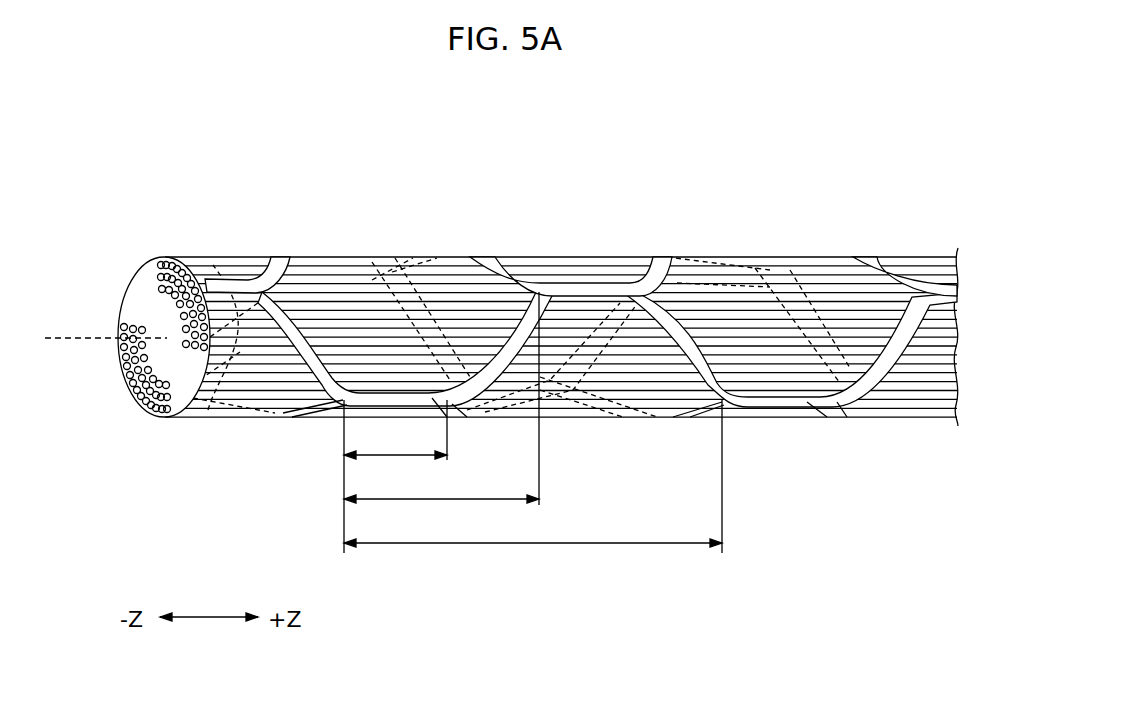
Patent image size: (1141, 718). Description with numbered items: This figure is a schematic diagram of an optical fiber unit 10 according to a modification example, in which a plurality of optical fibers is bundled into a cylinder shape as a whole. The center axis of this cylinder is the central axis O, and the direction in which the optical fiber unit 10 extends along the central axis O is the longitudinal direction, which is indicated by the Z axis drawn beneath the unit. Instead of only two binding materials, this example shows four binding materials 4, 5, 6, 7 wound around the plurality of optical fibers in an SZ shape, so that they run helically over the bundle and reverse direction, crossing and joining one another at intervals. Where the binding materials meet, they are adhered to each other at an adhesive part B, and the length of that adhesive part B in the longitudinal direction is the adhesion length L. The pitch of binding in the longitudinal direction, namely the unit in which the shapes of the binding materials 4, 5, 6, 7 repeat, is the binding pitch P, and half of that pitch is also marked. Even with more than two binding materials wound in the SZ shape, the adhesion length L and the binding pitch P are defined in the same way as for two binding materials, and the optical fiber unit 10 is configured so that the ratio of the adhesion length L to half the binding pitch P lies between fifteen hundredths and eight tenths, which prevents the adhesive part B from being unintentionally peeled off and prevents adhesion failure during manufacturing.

The optical fiber unit 10 is at (159, 203).
The binding material 4 is at (218, 290).
The binding material 5 is at (308, 347).
The binding material 6 is at (325, 412).
The binding material 7 is at (208, 410).
The adhesive part B is at (387, 397).
The central axis O is at (76, 338).
The adhesion length L is at (395, 476).
The binding pitch P is at (533, 422).